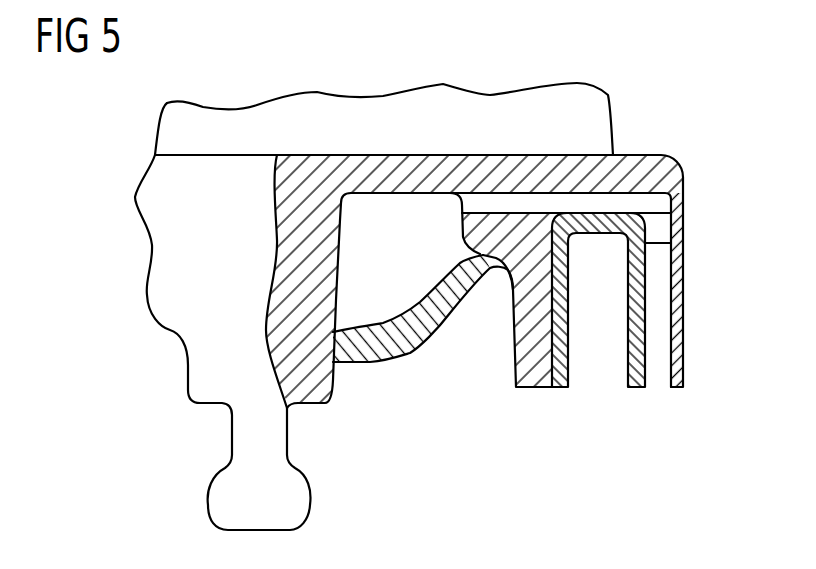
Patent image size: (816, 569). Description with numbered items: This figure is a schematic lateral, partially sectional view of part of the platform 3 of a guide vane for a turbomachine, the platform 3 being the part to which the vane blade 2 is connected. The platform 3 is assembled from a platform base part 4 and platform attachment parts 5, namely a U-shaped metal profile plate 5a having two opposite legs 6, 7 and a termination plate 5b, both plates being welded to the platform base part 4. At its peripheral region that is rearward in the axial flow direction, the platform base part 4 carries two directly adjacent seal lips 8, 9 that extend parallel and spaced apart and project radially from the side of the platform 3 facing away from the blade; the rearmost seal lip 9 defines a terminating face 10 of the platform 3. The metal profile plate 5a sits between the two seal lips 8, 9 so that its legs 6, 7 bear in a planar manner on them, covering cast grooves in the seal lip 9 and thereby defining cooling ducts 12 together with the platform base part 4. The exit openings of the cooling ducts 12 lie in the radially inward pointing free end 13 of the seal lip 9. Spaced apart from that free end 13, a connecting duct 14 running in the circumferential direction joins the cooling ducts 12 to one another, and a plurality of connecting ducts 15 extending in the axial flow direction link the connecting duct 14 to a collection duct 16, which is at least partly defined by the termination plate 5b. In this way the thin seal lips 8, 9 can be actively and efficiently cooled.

The vane blade 2 is at (590, 100).
The platform 3 is at (147, 207).
The platform base part 4 is at (673, 173).
The platform attachment parts 5 is at (590, 340).
The U-shaped metal profile plate 5a is at (598, 227).
The termination plate 5b is at (368, 343).
The leg 6 is at (637, 388).
The leg 7 is at (562, 388).
The seal lip 8 is at (675, 307).
The seal lip 9 is at (533, 388).
The terminating face 10 is at (683, 257).
The cooling ducts 12 is at (665, 353).
The free end 13 is at (657, 388).
The connecting duct 14 is at (660, 228).
The connecting ducts 15 is at (525, 203).
The collection duct 16 is at (430, 262).